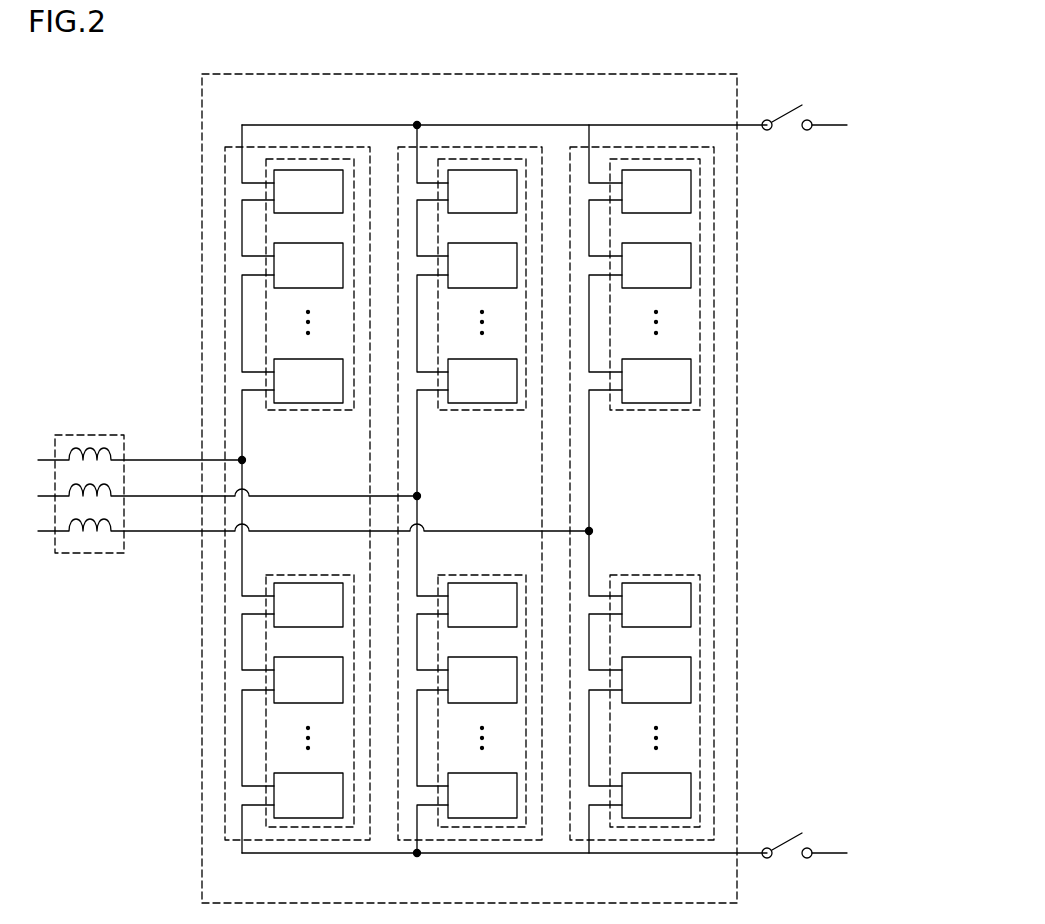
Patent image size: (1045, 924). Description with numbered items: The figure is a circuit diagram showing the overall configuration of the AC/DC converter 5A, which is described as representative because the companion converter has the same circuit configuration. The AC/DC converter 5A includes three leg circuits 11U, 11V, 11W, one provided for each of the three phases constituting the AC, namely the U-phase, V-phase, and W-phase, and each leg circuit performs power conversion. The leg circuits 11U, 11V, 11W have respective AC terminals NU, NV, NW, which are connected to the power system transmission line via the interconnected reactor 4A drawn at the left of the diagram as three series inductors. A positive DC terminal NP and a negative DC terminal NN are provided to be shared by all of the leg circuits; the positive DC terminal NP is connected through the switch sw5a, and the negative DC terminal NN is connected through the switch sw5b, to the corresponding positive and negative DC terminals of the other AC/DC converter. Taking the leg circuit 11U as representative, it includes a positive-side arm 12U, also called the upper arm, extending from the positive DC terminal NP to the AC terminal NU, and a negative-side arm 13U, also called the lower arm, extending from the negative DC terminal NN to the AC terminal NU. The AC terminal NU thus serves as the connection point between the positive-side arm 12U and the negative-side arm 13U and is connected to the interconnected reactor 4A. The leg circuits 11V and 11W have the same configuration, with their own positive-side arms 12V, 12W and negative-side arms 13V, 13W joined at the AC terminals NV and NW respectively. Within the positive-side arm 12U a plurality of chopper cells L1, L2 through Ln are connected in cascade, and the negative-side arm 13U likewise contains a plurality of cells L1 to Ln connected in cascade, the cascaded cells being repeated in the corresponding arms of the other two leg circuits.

The AC/DC converter 5A is at (612, 74).
The interconnected reactor 4A is at (111, 435).
The leg circuit 11U is at (293, 147).
The positive-side arm 12U is at (345, 159).
The negative-side arm 13U is at (290, 575).
The leg circuit 11V is at (464, 147).
The positive-side arm 12V is at (515, 159).
The negative-side arm 13V is at (462, 575).
The leg circuit 11W is at (636, 147).
The positive-side arm 12W is at (687, 159).
The negative-side arm 13W is at (650, 575).
The cell L1 is at (306, 213).
The cell L2 is at (306, 288).
The cell Ln is at (306, 403).
The positive DC terminal NP is at (417, 125).
The negative DC terminal NN is at (419, 856).
The AC terminal NU is at (246, 460).
The AC terminal NV is at (421, 496).
The AC terminal NW is at (593, 531).
The switch sw5a is at (785, 112).
The switch sw5b is at (785, 840).